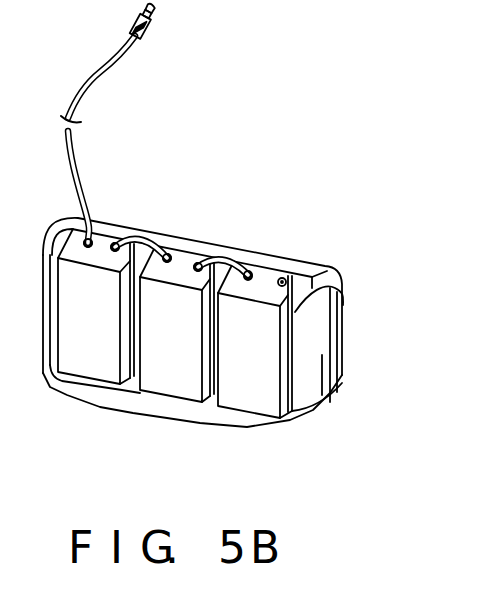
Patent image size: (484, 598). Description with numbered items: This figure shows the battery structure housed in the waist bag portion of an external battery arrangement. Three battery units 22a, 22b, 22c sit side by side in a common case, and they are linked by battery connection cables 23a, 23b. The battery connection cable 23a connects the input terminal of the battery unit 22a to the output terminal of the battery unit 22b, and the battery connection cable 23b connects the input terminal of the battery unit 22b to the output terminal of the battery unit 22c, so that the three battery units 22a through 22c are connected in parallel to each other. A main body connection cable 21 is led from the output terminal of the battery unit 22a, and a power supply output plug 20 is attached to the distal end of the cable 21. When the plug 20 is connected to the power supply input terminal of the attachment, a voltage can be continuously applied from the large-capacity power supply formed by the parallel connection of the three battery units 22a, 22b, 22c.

The power supply output plug 20 is at (143, 28).
The main body connection cable 21 is at (83, 179).
The battery unit 22a is at (88, 374).
The battery unit 22b is at (172, 384).
The battery unit 22c is at (252, 393).
The battery connection cable 23a is at (158, 242).
The battery connection cable 23b is at (235, 264).